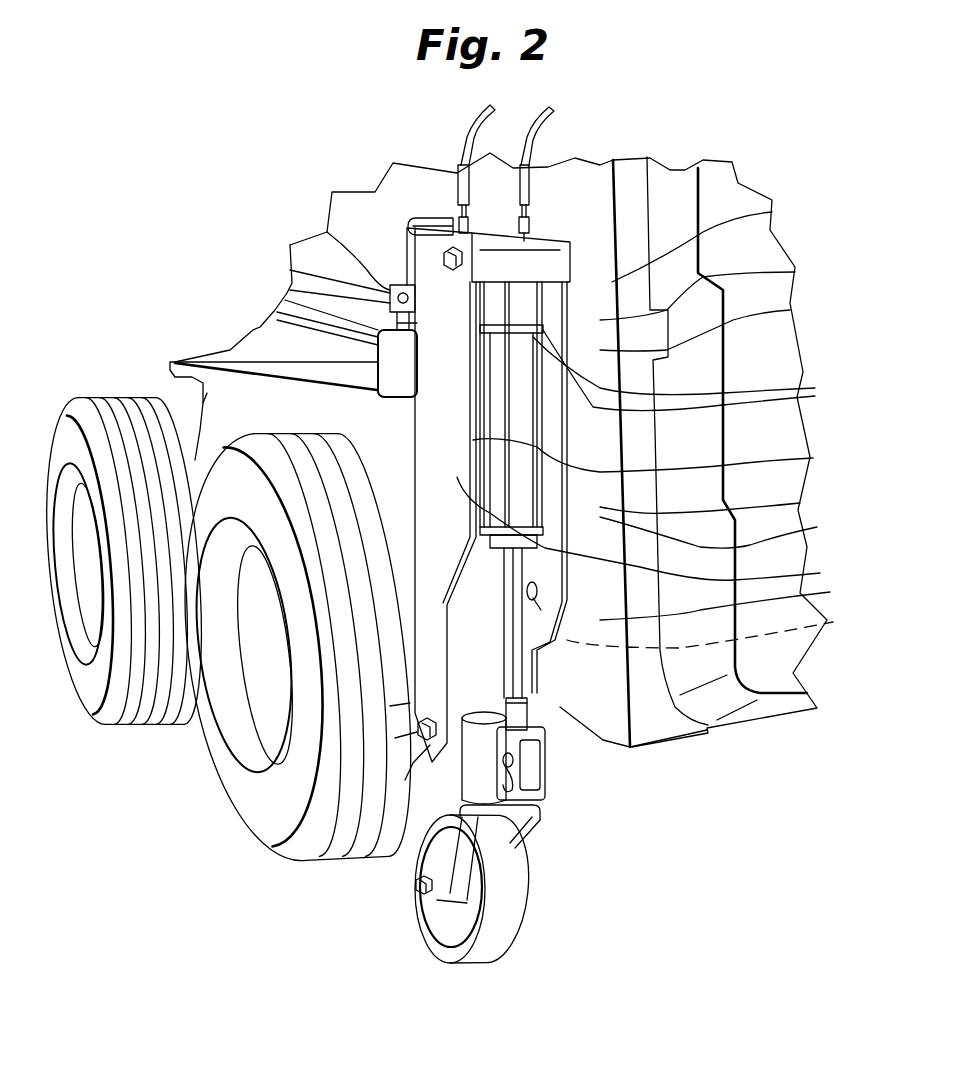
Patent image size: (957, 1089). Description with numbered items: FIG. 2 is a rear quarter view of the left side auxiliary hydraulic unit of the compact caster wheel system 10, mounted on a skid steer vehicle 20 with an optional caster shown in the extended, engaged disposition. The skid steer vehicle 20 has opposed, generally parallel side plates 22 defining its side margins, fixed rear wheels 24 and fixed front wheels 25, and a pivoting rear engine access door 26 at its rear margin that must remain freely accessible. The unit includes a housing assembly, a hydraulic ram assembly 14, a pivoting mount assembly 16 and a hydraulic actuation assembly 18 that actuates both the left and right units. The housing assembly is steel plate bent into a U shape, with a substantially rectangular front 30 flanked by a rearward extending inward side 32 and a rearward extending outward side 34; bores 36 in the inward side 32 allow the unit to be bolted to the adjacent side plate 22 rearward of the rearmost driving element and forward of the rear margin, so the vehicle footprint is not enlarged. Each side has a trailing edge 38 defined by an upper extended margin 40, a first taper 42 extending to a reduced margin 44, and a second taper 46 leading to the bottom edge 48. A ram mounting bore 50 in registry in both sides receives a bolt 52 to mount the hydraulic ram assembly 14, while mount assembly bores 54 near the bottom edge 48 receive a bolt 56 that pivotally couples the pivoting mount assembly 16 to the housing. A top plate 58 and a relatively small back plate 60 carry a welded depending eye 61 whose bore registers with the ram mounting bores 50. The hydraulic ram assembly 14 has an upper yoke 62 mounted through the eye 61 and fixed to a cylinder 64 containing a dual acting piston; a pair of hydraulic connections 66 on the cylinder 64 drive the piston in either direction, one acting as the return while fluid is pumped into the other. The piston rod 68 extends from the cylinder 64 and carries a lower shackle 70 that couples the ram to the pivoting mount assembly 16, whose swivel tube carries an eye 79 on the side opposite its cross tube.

The compact caster wheel system 10 is at (383, 241).
The hydraulic ram assembly 14 is at (541, 447).
The pivoting mount assembly 16 is at (537, 880).
The hydraulic actuation assembly 18 is at (322, 232).
The skid steer vehicle 20 is at (268, 421).
The side plates 22 is at (680, 732).
The rear wheels 24 is at (192, 740).
The front wheels 25 is at (130, 720).
The rear engine access door 26 is at (763, 682).
The front 30 is at (548, 775).
The inward side 32 is at (654, 532).
The outward side 34 is at (724, 531).
The bores 36 is at (838, 623).
The trailing edge 38 is at (790, 310).
The upper extended margin 40 is at (795, 272).
The first taper 42 is at (537, 685).
The reduced margin 44 is at (540, 738).
The second taper 46 is at (548, 702).
The bottom edge 48 is at (413, 763).
The ram mounting bore 50 is at (460, 168).
The bolt 52 is at (455, 245).
The mount assembly bores 54 is at (410, 703).
The bolt 56 is at (417, 732).
The top plate 58 is at (562, 232).
The back plate 60 is at (487, 245).
The eye 61 is at (772, 212).
The upper yoke 62 is at (390, 292).
The cylinder 64 is at (490, 303).
The hydraulic connections 66 is at (687, 370).
The piston rod 68 is at (603, 740).
The lower shackle 70 is at (540, 813).
The eye 79 is at (542, 790).